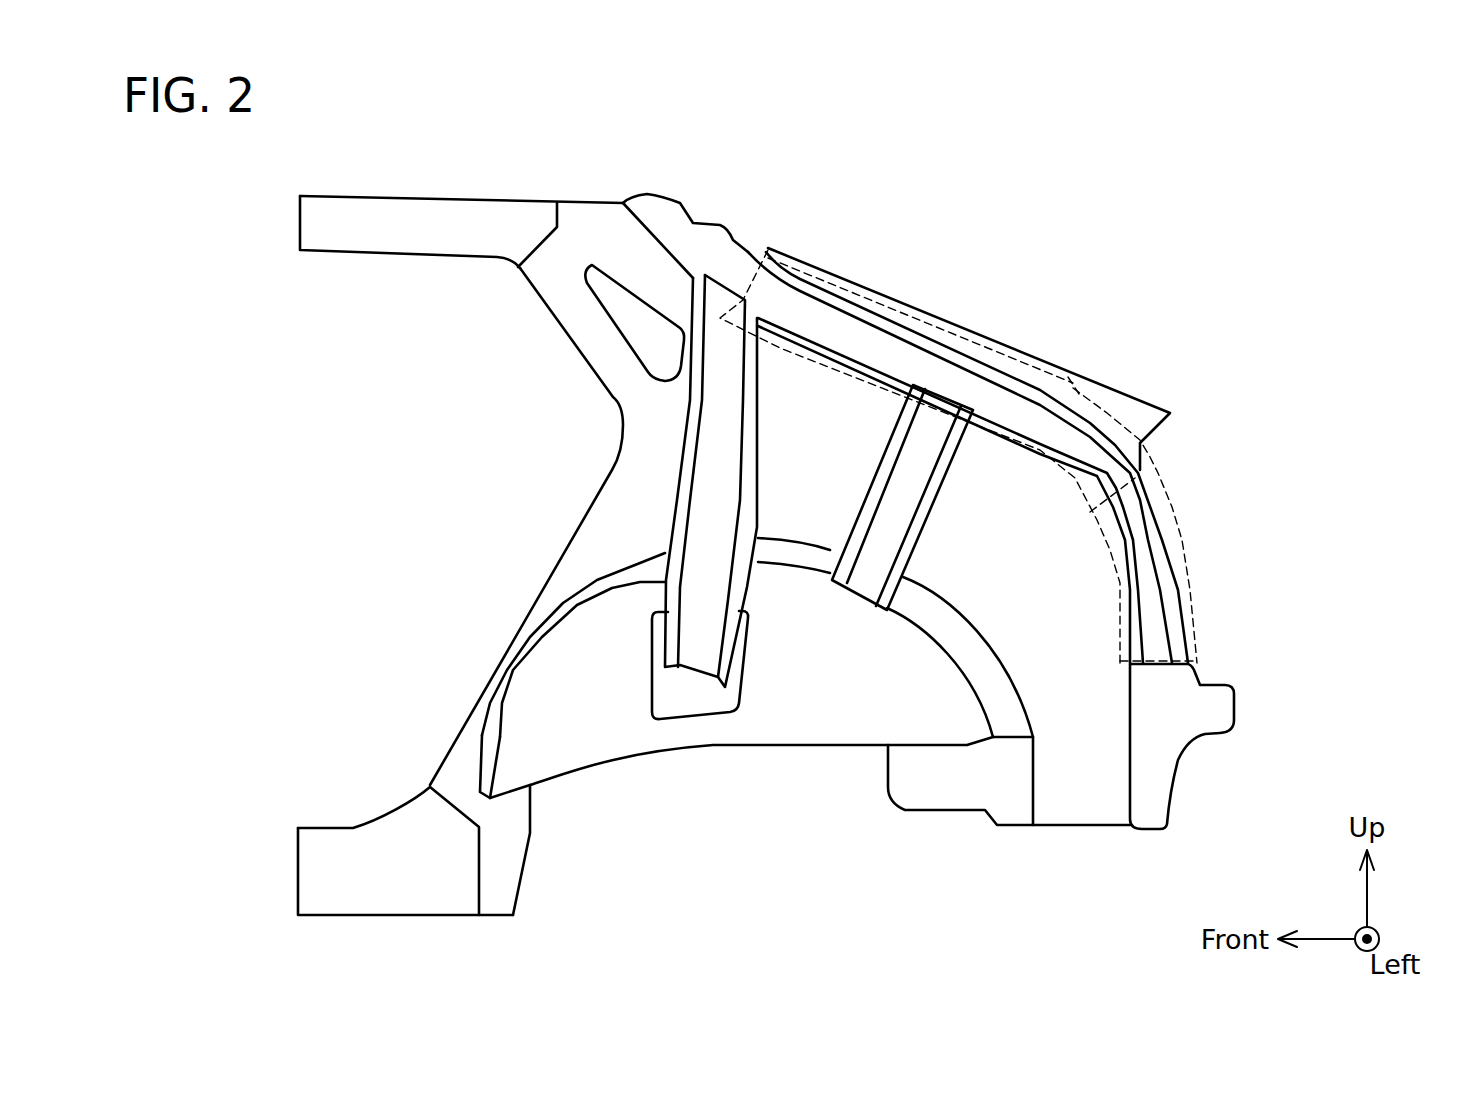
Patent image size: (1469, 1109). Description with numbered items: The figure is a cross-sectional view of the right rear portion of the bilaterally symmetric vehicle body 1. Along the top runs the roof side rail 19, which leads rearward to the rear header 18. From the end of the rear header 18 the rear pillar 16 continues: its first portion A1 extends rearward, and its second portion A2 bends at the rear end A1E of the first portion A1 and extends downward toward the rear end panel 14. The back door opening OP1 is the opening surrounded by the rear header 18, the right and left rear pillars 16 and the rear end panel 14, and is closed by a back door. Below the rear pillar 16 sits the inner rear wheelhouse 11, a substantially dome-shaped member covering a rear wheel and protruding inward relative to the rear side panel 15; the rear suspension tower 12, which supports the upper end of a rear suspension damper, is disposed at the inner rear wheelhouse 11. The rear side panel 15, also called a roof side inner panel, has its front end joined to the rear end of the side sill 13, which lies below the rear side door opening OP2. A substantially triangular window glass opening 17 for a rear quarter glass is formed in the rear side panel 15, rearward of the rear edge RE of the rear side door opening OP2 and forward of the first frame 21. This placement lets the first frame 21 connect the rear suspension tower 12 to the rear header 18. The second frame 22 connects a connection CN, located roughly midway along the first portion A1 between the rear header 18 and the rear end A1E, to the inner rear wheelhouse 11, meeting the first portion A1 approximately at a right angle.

The vehicle body 1 is at (1271, 142).
The inner rear wheelhouse 11 is at (762, 723).
The rear suspension tower 12 is at (690, 708).
The side sill 13 is at (310, 867).
The rear end panel 14 is at (1182, 784).
The rear side panel 15 is at (647, 478).
The rear pillar 16 is at (1283, 295).
The window glass opening 17 is at (643, 331).
The rear header 18 is at (667, 213).
The roof side rail 19 is at (415, 220).
The first frame 21 is at (720, 410).
The second frame 22 is at (868, 570).
The first portion A1 is at (1085, 380).
The second portion A2 is at (1178, 527).
The rear end A1E is at (1183, 462).
The connection CN is at (1025, 306).
The back door opening OP1 is at (1317, 527).
The rear side door opening OP2 is at (355, 552).
The rear edge RE is at (548, 323).